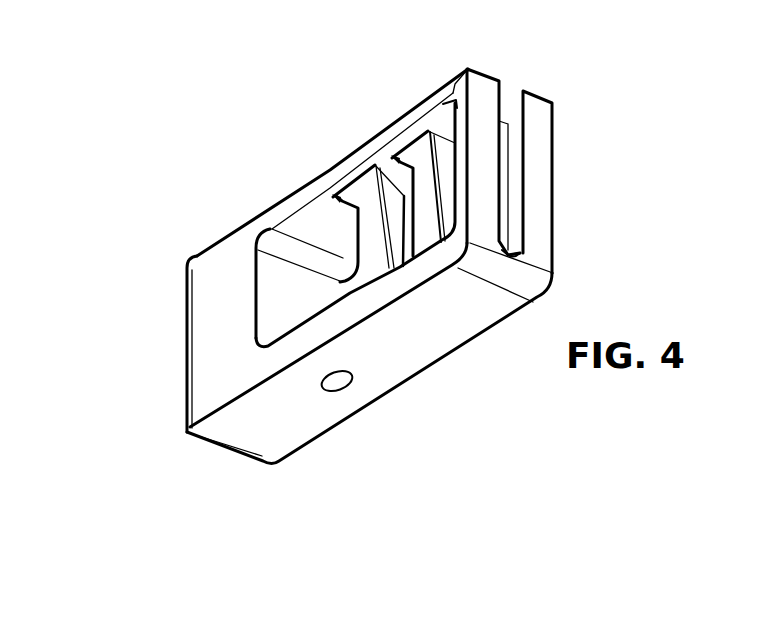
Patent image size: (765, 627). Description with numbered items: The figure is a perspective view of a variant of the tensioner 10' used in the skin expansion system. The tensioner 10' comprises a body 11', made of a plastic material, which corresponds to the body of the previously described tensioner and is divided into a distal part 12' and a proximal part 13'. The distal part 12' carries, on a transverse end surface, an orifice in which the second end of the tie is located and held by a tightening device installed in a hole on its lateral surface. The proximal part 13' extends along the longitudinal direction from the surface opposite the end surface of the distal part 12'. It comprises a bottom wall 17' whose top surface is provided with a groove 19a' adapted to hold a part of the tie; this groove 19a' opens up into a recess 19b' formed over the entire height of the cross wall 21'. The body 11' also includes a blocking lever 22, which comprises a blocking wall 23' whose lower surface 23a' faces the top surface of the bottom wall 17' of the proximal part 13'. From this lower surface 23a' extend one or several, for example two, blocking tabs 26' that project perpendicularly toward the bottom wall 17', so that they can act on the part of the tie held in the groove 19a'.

The tensioner 10' is at (349, 292).
The body 11' is at (369, 397).
The distal part 12' is at (159, 344).
The proximal part 13' is at (381, 402).
The bottom wall 17' is at (502, 328).
The groove 19a' is at (573, 259).
The recess 19b' is at (572, 172).
The cross wall 21' is at (556, 171).
The blocking lever 22 is at (393, 121).
The blocking wall 23' is at (356, 220).
The lower surface of the blocking wall 23a' is at (288, 213).
The blocking tabs 26' is at (473, 191).